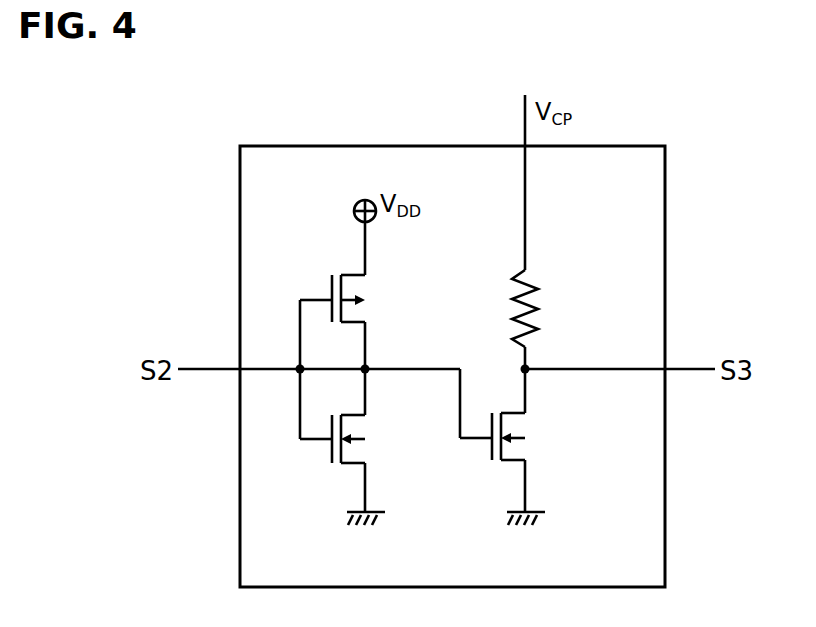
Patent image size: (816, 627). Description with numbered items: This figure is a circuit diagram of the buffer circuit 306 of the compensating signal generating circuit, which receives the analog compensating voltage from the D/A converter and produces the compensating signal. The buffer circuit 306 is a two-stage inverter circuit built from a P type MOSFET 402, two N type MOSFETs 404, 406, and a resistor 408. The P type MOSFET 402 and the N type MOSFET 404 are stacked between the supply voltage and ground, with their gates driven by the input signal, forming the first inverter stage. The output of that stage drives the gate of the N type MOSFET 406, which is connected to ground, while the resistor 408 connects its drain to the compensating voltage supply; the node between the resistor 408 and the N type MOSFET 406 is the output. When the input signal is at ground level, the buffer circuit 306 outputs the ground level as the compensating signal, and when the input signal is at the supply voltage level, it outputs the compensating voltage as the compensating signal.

The buffer circuit 306 is at (652, 183).
The P type MOSFET 402 is at (332, 288).
The N type MOSFET 404 is at (332, 452).
The N type MOSFET 406 is at (492, 453).
The resistor 408 is at (530, 282).